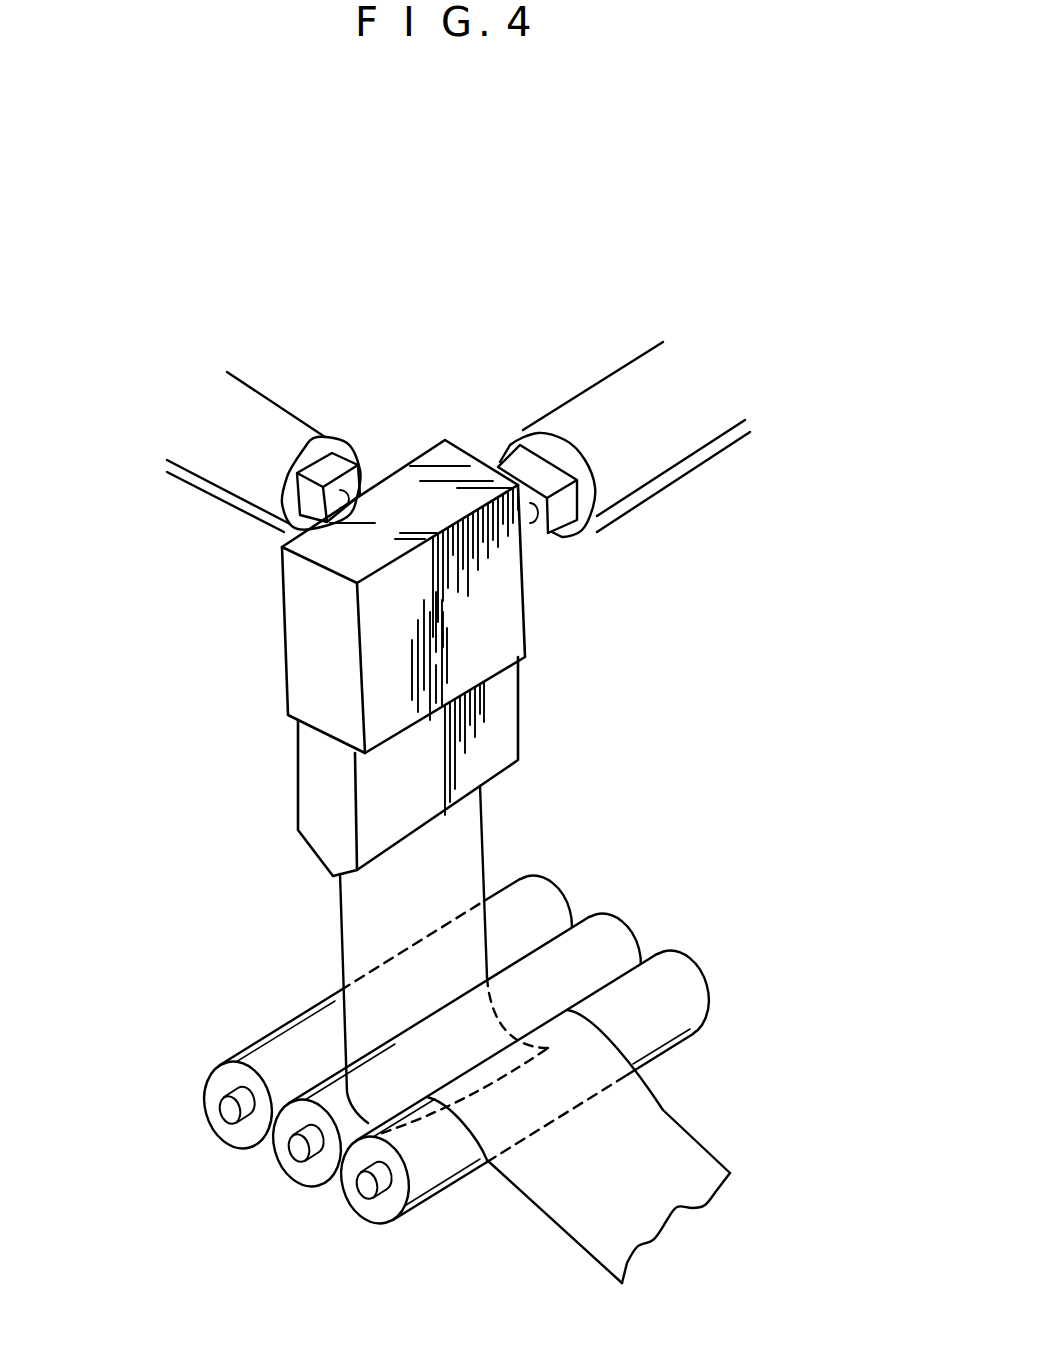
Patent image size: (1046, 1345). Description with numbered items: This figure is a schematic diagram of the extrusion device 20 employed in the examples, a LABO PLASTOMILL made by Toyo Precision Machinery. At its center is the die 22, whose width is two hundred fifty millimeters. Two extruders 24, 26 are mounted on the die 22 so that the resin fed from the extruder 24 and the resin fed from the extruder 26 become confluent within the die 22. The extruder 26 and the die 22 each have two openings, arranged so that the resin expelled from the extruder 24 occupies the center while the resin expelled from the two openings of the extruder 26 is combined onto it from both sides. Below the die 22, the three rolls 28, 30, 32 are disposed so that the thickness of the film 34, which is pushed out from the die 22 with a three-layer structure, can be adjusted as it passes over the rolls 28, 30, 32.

The device 20 is at (530, 255).
The die 22 is at (493, 628).
The extruder 24 is at (260, 418).
The extruder 26 is at (583, 417).
The roll 28 is at (670, 957).
The roll 30 is at (603, 922).
The roll 32 is at (537, 892).
The film 34 is at (481, 837).